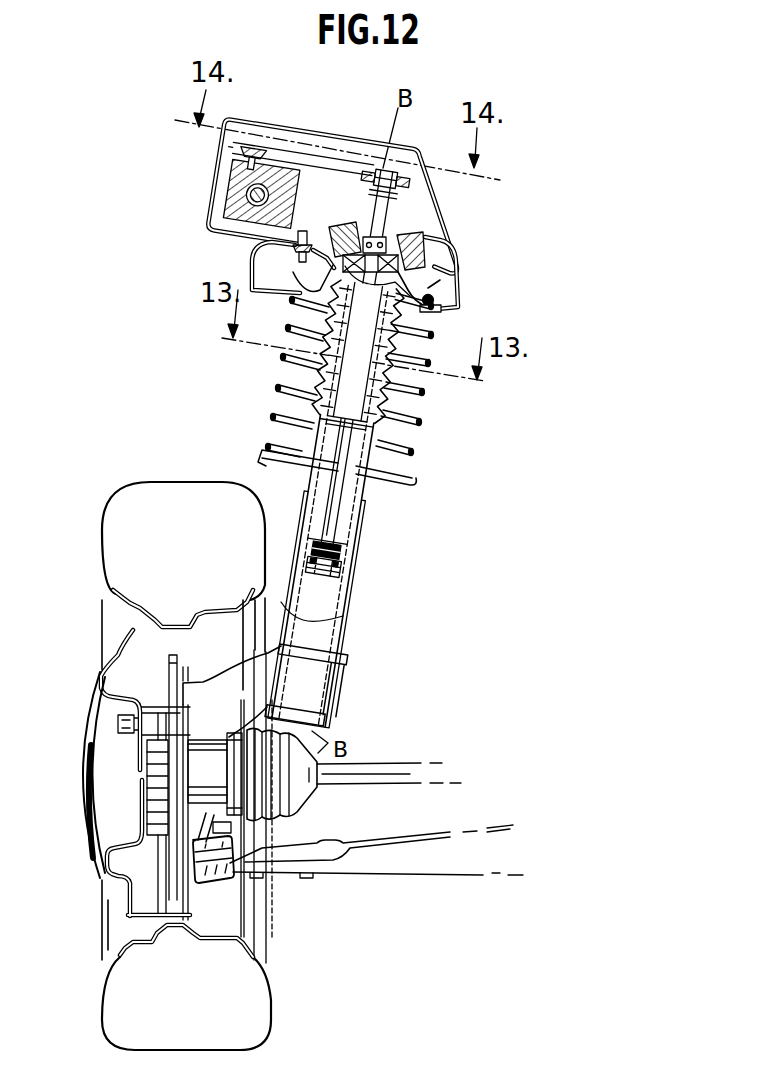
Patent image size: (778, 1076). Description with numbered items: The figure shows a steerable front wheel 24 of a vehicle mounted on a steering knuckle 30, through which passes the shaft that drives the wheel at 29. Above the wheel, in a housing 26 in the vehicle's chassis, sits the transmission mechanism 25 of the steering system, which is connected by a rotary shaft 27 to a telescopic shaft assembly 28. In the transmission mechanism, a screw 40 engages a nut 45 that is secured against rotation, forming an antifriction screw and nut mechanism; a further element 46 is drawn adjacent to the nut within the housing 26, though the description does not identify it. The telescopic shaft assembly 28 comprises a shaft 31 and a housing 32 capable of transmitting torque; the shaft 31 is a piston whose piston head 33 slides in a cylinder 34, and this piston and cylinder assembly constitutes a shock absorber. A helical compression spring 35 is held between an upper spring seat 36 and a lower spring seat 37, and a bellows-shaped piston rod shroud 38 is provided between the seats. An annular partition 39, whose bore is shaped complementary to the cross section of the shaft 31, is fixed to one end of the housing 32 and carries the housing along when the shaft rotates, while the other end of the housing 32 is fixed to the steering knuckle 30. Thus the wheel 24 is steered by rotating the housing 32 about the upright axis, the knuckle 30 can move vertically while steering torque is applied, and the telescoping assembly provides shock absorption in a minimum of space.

The steerable front wheel 24 is at (218, 500).
The transmission mechanism 25 is at (418, 153).
The housing 26 is at (420, 185).
The rotary shaft 27 is at (380, 217).
The telescopic shaft assembly 28 is at (362, 533).
The shaft passage through steering knuckle 29 is at (217, 770).
The steering knuckle 30 is at (324, 680).
The shaft 31 is at (345, 428).
The housing 32 is at (359, 492).
The piston head 33 is at (329, 587).
The cylinder 34 is at (324, 558).
The helical compression spring 35 is at (432, 328).
The upper spring seat 36 is at (265, 452).
The lower spring seat 37 is at (433, 293).
The bellows-shaped piston rod shroud 38 is at (307, 346).
The annular partition 39 is at (372, 398).
The screw 40 is at (228, 212).
The nut 45 is at (265, 186).
The bolt 46 is at (255, 150).